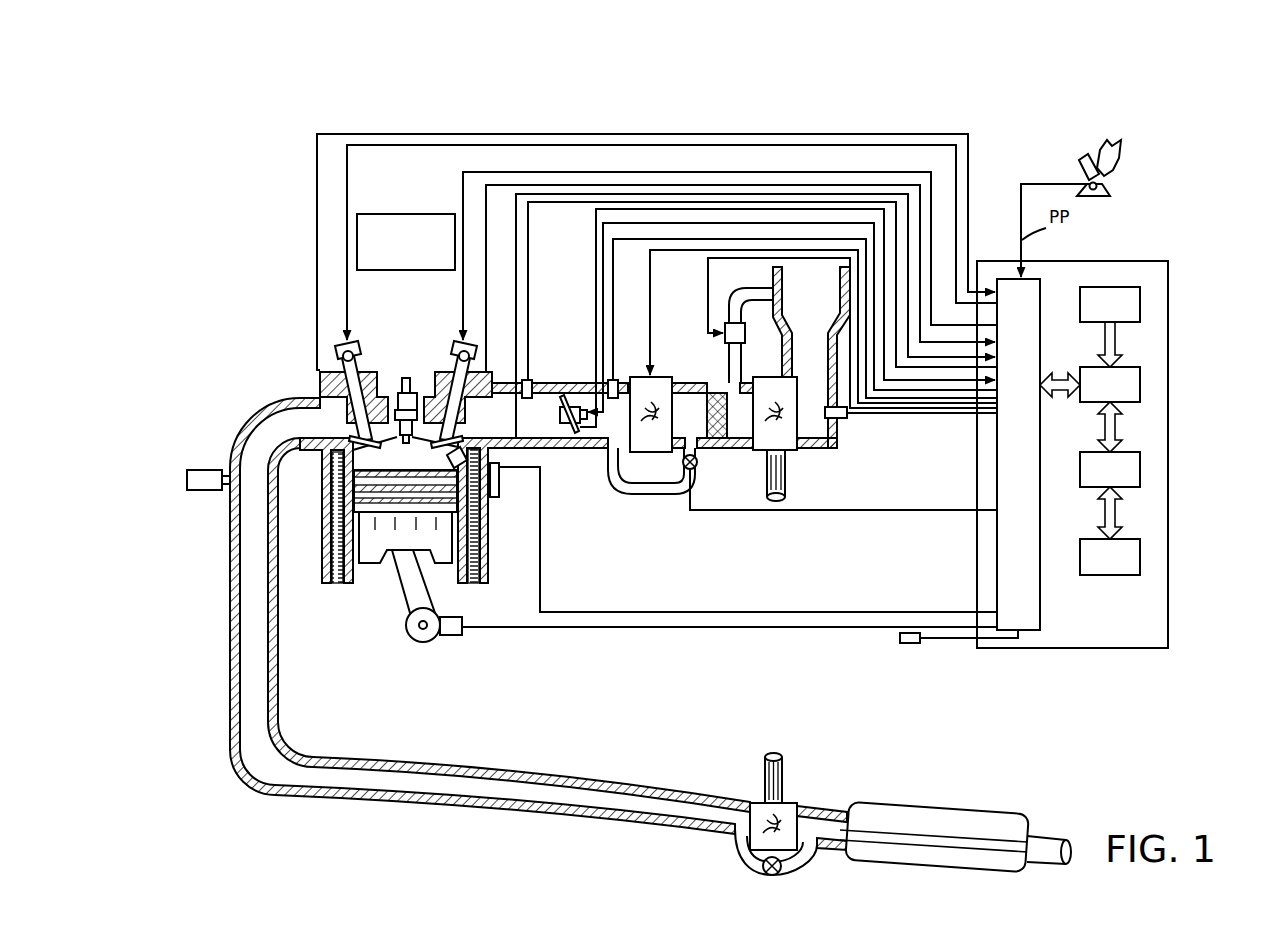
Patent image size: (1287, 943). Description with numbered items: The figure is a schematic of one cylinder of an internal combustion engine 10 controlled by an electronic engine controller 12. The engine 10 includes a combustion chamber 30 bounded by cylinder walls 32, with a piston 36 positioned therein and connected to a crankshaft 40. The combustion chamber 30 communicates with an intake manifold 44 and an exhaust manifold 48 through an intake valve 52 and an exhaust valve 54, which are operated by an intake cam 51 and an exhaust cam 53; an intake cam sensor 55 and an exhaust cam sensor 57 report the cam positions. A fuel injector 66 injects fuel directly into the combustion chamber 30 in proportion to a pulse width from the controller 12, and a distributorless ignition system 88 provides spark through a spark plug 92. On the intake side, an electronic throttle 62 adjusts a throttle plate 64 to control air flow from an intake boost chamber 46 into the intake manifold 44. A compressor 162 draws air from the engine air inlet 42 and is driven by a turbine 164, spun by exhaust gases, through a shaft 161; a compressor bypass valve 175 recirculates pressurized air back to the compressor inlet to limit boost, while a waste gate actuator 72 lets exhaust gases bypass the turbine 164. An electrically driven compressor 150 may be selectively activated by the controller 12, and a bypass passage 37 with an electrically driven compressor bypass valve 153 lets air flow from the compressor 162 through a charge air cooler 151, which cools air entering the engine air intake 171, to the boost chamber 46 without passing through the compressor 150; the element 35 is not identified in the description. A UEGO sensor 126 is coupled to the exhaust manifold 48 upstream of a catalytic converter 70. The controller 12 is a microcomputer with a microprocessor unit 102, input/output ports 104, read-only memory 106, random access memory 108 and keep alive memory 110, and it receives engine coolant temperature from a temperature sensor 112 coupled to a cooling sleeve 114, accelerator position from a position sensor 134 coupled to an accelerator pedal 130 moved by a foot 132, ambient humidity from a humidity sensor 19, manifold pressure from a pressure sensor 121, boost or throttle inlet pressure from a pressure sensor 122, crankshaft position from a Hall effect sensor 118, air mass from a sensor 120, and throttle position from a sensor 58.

The internal combustion engine 10 is at (262, 332).
The electronic engine controller 12 is at (1163, 262).
The humidity sensor 19 is at (905, 645).
The combustion chamber 30 is at (403, 453).
The cylinder walls 32 is at (352, 586).
The compressor recirculation passage inlet 35 is at (692, 448).
The piston 36 is at (390, 553).
The electrically driven compressor bypass passage 37 is at (637, 497).
The crankshaft 40 is at (414, 641).
The engine air inlet 42 is at (825, 283).
The intake manifold 44 is at (545, 429).
The intake boost chamber 46 is at (625, 429).
The exhaust manifold 48 is at (304, 431).
The intake cam 51 is at (462, 338).
The intake valve 52 is at (446, 436).
The exhaust cam 53 is at (349, 338).
The exhaust valve 54 is at (352, 402).
The intake cam sensor 55 is at (472, 359).
The exhaust cam sensor 57 is at (343, 352).
The throttle position sensor 58 is at (583, 408).
The electronic throttle 62 is at (565, 398).
The throttle plate 64 is at (572, 382).
The fuel injector 66 is at (482, 458).
The catalytic converter 70 is at (847, 860).
The waste gate actuator 72 is at (762, 868).
The distributorless ignition system 88 is at (374, 214).
The spark plug 92 is at (410, 376).
The microprocessor unit 102 is at (1140, 380).
The input/output ports 104 is at (1041, 288).
The read-only memory 106 is at (1140, 297).
The random access memory 108 is at (1140, 465).
The keep alive memory 110 is at (1140, 550).
The temperature sensor 112 is at (499, 470).
The cooling sleeve 114 is at (482, 560).
The Hall effect sensor 118 is at (453, 636).
The air mass sensor 120 is at (840, 418).
The pressure sensor 121 is at (527, 378).
The pressure sensor 122 is at (614, 378).
The Universal Exhaust Gas Oxygen sensor 126 is at (180, 472).
The accelerator pedal 130 is at (1080, 164).
The foot 132 is at (1119, 154).
The position sensor 134 is at (1110, 191).
The electrically driven compressor 150 is at (652, 376).
The charge air cooler 151 is at (712, 392).
The electrically driven compressor bypass valve 153 is at (683, 463).
The shaft 161 is at (786, 470).
The compressor 162 is at (776, 376).
The turbine 164 is at (753, 803).
The engine air intake 171 is at (848, 459).
The compressor bypass valve 175 is at (727, 322).